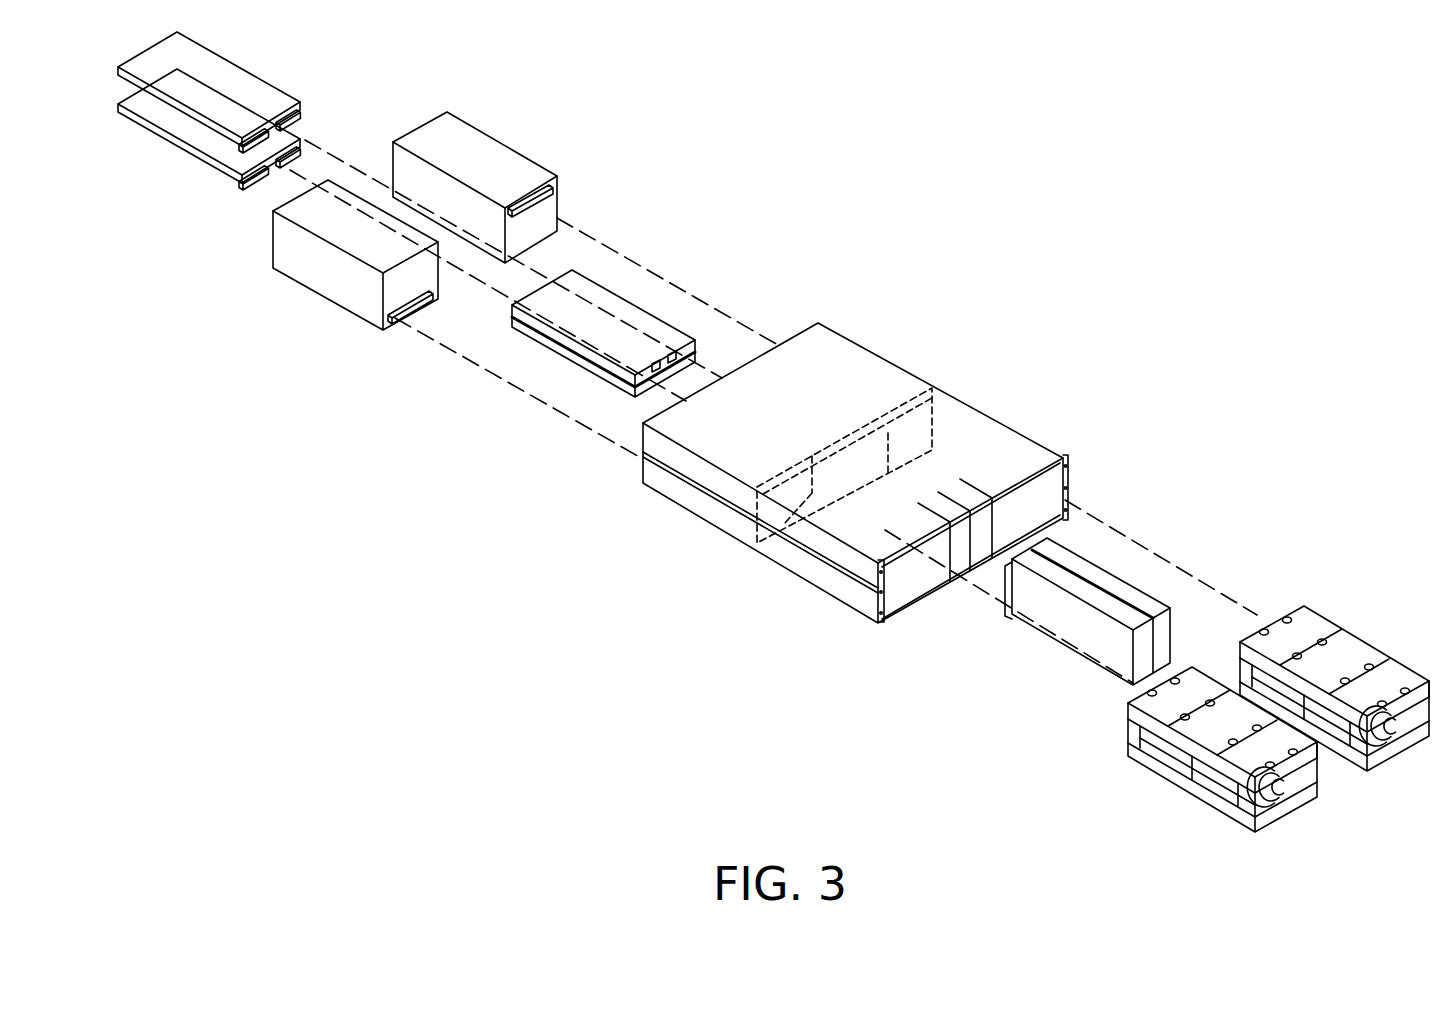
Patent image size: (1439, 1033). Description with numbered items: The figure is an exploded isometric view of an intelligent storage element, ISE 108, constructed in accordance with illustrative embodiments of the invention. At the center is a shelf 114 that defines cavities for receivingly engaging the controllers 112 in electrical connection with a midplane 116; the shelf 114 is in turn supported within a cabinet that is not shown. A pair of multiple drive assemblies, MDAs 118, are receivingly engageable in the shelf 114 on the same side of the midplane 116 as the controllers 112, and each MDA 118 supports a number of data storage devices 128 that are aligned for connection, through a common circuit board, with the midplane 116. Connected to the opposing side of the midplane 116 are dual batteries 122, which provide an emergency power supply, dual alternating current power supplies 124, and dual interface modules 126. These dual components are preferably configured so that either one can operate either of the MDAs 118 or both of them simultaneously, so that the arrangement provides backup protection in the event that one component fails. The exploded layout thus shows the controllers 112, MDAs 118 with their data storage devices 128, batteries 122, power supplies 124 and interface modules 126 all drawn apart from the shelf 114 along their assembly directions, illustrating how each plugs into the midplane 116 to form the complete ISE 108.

The intelligent storage element 108 is at (905, 161).
The controller 112 is at (1123, 590).
The shelf 114 is at (708, 517).
The midplane 116 is at (853, 450).
The multiple drive assembly 118 is at (1234, 687).
The battery 122 is at (597, 295).
The alternating current power supply 124 is at (472, 156).
The interface module 126 is at (238, 91).
The data storage device 128 is at (1222, 730).